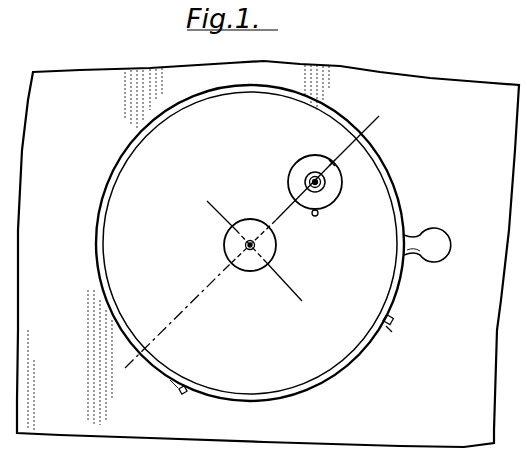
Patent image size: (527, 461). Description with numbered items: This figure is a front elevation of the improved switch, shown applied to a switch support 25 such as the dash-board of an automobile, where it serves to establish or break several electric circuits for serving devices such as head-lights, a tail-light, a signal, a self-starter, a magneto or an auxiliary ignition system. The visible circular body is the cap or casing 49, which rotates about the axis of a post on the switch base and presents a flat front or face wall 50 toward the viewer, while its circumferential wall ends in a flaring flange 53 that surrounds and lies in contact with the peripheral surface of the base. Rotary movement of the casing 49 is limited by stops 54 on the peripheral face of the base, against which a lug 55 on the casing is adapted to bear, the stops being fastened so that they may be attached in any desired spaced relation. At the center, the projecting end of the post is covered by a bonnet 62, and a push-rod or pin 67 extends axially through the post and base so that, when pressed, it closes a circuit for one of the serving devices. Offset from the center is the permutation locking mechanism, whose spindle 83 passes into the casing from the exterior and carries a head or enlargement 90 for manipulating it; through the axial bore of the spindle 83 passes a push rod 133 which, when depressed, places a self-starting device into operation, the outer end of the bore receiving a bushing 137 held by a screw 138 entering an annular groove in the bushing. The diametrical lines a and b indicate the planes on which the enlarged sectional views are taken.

The switch support 25 is at (268, 254).
The cap or casing 49 is at (357, 357).
The flat front or face wall 50 is at (250, 243).
The flaring flange 53 is at (178, 385).
The stops 54 is at (187, 395).
The lug 55 is at (392, 332).
The bonnet 62 is at (248, 265).
The push-rod or pin 67 is at (255, 246).
The spindle 83 is at (334, 187).
The head or enlargement 90 is at (309, 183).
The push rod 133 is at (311, 184).
The bushing 137 is at (315, 178).
The screw 138 is at (336, 165).
The line a— a is at (247, 242).
The line b— b is at (251, 247).